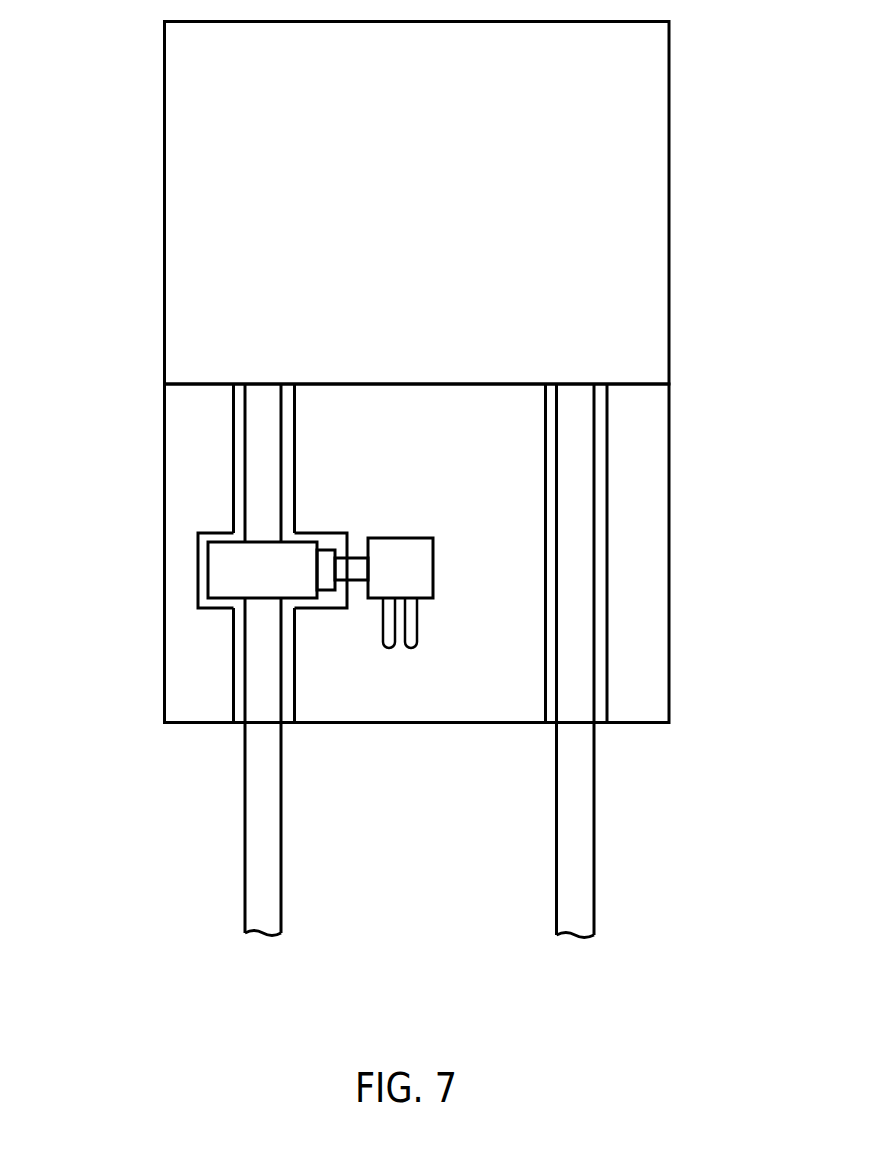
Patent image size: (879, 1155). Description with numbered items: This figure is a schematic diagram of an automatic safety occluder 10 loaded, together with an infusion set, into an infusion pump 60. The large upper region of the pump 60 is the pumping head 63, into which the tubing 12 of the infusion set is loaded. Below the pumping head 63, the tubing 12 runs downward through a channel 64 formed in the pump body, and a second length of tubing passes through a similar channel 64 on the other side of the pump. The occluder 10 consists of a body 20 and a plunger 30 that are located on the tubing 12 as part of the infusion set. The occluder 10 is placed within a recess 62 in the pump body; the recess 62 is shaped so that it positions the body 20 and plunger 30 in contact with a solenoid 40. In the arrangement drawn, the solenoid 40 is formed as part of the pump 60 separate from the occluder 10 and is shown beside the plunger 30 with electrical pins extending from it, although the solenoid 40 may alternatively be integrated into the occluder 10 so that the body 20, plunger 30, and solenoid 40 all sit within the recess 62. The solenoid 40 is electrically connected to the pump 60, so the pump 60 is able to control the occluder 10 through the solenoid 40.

The occluder 10 is at (275, 590).
The tubing 12 is at (268, 847).
The body 20 is at (238, 568).
The plunger 30 is at (318, 550).
The solenoid 40 is at (423, 585).
The infusion pump 60 is at (638, 510).
The recess 62 is at (207, 610).
The pumping head 63 is at (407, 248).
The channel 64 is at (295, 668).